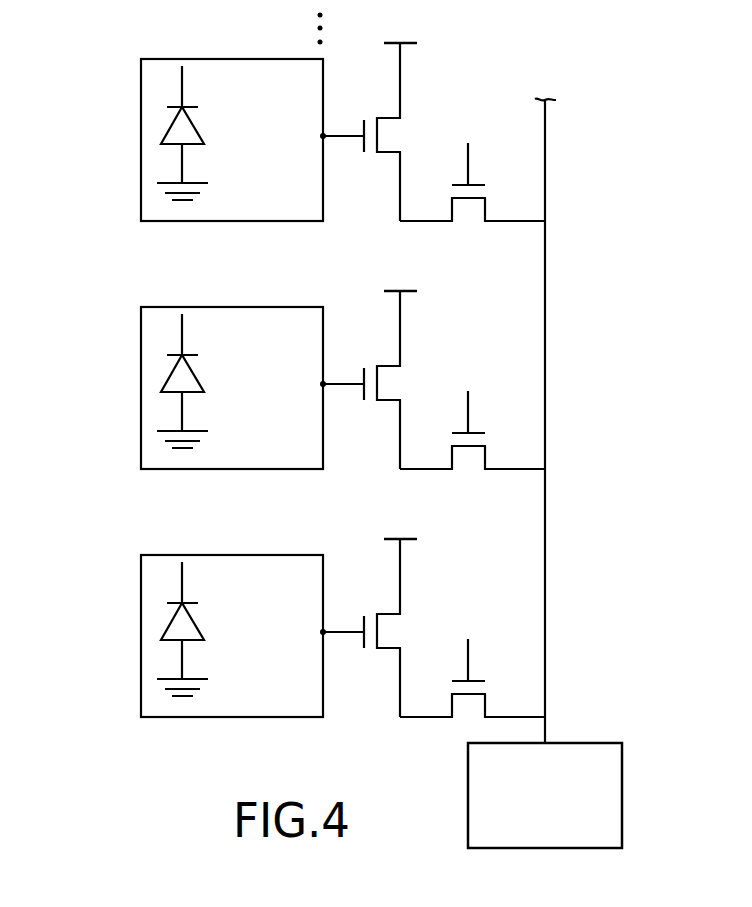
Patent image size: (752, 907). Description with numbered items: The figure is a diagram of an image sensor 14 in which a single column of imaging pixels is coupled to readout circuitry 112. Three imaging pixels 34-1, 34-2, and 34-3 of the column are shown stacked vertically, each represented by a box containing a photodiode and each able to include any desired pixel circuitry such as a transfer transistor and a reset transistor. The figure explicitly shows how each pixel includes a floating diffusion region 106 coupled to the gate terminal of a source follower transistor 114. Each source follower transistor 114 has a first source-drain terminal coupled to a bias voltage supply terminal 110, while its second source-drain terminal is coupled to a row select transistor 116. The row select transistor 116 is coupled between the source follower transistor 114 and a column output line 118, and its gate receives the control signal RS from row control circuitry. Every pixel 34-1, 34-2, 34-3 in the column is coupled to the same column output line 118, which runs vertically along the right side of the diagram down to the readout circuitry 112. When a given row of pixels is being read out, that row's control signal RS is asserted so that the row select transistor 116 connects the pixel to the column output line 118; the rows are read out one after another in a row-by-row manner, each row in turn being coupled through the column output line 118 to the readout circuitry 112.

The image sensor 14 is at (591, 143).
The imaging pixel 34-1 is at (141, 137).
The imaging pixel 34-2 is at (180, 388).
The imaging pixel 34-3 is at (180, 636).
The floating diffusion region 106 is at (323, 136).
The bias voltage supply terminal 110 is at (412, 45).
The readout circuitry 112 is at (622, 790).
The source follower transistor 114 is at (410, 132).
The row select transistor 116 is at (467, 218).
The column output line 118 is at (545, 388).